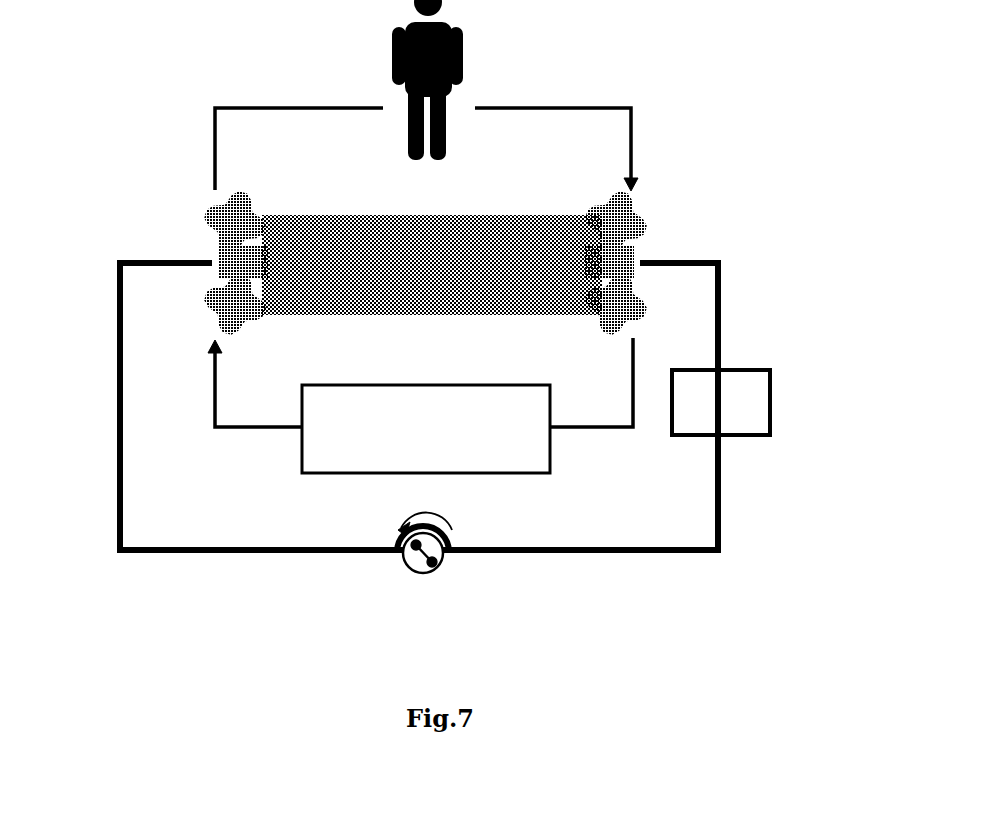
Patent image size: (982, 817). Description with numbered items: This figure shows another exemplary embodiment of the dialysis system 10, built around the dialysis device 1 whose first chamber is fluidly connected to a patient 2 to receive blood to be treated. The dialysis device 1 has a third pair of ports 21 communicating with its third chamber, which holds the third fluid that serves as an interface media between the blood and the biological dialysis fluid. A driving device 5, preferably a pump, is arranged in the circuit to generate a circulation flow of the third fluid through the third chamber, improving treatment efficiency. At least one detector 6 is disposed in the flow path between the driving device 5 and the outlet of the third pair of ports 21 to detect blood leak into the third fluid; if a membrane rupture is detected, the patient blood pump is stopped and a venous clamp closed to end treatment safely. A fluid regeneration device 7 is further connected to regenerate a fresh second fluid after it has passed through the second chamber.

The dialysis system 10 is at (143, 98).
The dialysis device 1 is at (392, 260).
The patient 2 is at (447, 85).
The third pair of ports 21 is at (645, 256).
The driving device 5 is at (444, 559).
The detector 6 is at (733, 385).
The fluid regeneration device 7 is at (490, 438).